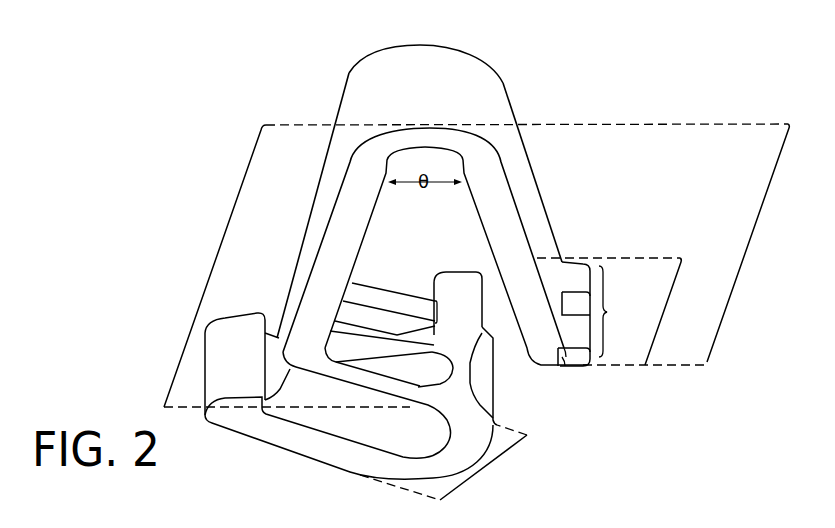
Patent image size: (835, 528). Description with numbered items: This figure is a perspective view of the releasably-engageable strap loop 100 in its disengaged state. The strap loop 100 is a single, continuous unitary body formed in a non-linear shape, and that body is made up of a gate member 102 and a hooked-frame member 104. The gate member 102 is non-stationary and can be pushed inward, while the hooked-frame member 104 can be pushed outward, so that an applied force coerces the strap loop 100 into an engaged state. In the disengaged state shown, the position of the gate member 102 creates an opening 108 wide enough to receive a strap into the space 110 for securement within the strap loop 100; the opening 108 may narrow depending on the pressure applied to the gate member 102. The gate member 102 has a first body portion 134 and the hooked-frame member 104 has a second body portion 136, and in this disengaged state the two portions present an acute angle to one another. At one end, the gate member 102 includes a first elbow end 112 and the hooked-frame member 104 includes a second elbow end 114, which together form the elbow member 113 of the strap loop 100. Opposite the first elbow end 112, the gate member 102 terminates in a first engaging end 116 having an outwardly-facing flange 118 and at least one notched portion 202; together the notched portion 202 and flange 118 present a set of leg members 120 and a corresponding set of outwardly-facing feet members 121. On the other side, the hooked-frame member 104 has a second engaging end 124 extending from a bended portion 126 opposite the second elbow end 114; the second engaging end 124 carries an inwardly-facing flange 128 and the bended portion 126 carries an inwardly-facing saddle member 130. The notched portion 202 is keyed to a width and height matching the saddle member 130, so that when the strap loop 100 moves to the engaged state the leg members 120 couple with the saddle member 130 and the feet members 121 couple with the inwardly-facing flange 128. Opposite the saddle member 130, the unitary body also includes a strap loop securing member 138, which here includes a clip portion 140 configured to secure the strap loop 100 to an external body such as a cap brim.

The releasably-engageable strap loop 100 is at (137, 167).
The gate member 102 is at (746, 252).
The hooked-frame member 104 is at (219, 248).
The opening 108 is at (503, 333).
The space 110 is at (430, 202).
The first elbow end 112 is at (487, 97).
The elbow member 113 is at (425, 45).
The second elbow end 114 is at (368, 93).
The first engaging end 116 is at (667, 307).
The outwardly-facing flange 118 is at (621, 311).
The set of leg members 120 is at (543, 248).
The set of outwardly-facing feet members 121 is at (565, 265).
The second engaging end 124 is at (487, 266).
The bended portion 126 is at (281, 382).
The inwardly-facing flange 128 is at (462, 328).
The inwardly-facing saddle member 130 is at (398, 363).
The first body portion 134 is at (495, 210).
The second body portion 136 is at (360, 205).
The strap loop securing member 138 is at (478, 470).
The clip portion 140 is at (232, 352).
The notched portion 202 is at (563, 357).